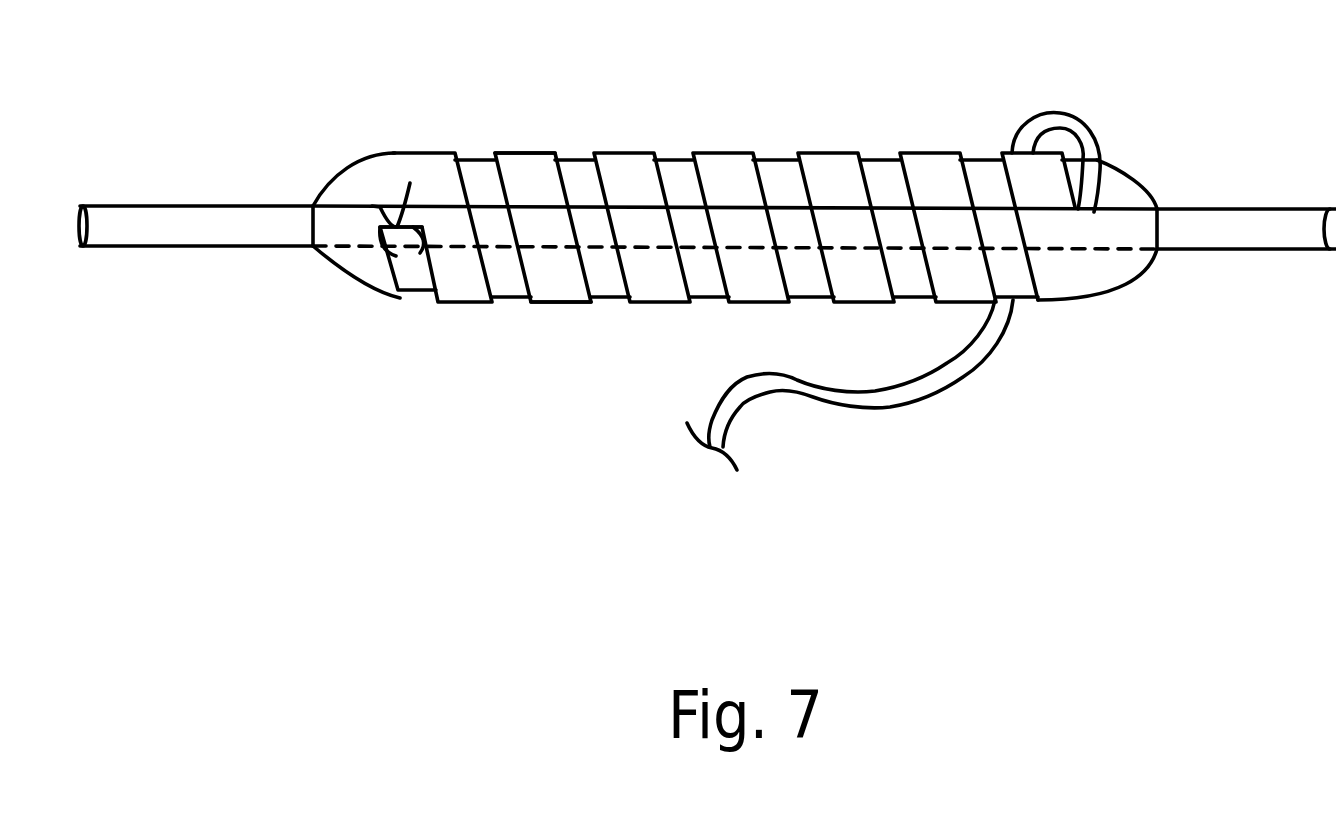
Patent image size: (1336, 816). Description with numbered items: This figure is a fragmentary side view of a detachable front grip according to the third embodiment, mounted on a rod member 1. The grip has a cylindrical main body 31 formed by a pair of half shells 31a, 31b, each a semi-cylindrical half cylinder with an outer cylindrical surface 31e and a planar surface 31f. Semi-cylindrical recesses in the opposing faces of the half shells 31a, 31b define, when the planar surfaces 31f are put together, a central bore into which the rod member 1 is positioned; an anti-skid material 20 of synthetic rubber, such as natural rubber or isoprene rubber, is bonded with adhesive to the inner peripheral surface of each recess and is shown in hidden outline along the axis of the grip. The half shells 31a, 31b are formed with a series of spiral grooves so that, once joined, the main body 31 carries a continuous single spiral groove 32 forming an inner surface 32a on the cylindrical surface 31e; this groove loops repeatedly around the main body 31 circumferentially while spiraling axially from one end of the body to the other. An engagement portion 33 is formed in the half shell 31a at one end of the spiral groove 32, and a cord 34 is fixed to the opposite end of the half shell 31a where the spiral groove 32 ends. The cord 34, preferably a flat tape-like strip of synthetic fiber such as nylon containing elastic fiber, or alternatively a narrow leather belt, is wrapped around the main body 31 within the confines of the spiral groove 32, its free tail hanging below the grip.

The rod member 1 is at (233, 223).
The anti-skid material 20 is at (657, 303).
The main body 31 is at (758, 240).
The half shell 31a is at (558, 280).
The half shell 31b is at (530, 168).
The cylindrical surface 31e is at (376, 180).
The planar surface 31f is at (410, 183).
The spiral groove 32 is at (678, 165).
The inner surface 32a is at (776, 160).
The engagement portion 33 is at (385, 230).
The cord 34 is at (1088, 128).